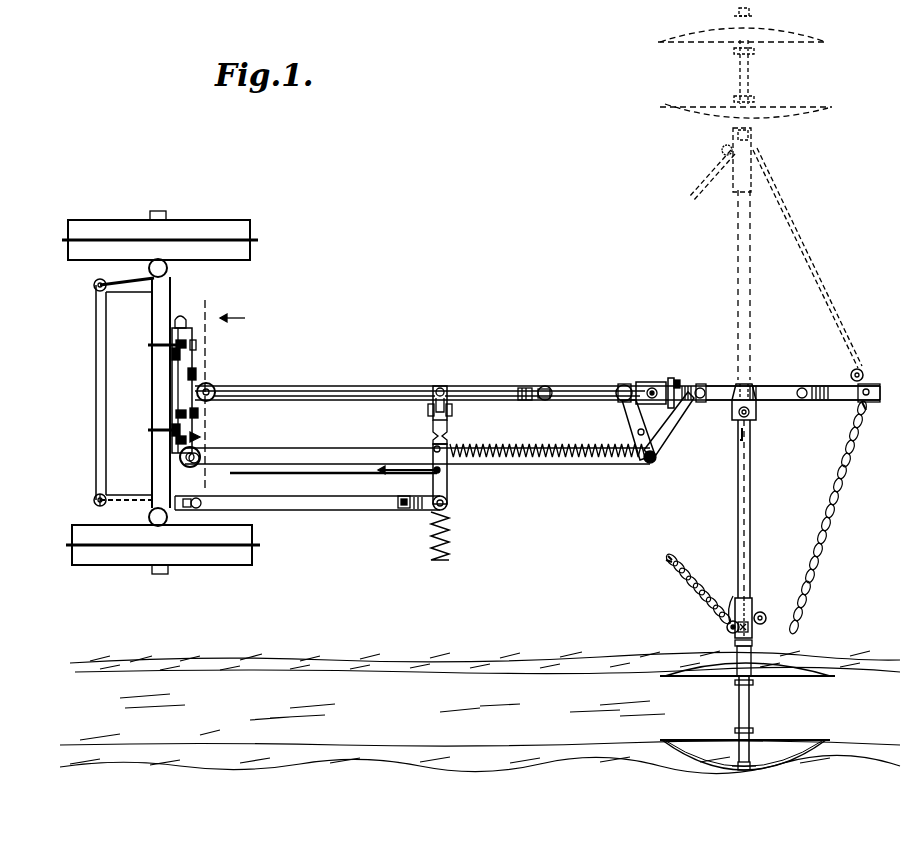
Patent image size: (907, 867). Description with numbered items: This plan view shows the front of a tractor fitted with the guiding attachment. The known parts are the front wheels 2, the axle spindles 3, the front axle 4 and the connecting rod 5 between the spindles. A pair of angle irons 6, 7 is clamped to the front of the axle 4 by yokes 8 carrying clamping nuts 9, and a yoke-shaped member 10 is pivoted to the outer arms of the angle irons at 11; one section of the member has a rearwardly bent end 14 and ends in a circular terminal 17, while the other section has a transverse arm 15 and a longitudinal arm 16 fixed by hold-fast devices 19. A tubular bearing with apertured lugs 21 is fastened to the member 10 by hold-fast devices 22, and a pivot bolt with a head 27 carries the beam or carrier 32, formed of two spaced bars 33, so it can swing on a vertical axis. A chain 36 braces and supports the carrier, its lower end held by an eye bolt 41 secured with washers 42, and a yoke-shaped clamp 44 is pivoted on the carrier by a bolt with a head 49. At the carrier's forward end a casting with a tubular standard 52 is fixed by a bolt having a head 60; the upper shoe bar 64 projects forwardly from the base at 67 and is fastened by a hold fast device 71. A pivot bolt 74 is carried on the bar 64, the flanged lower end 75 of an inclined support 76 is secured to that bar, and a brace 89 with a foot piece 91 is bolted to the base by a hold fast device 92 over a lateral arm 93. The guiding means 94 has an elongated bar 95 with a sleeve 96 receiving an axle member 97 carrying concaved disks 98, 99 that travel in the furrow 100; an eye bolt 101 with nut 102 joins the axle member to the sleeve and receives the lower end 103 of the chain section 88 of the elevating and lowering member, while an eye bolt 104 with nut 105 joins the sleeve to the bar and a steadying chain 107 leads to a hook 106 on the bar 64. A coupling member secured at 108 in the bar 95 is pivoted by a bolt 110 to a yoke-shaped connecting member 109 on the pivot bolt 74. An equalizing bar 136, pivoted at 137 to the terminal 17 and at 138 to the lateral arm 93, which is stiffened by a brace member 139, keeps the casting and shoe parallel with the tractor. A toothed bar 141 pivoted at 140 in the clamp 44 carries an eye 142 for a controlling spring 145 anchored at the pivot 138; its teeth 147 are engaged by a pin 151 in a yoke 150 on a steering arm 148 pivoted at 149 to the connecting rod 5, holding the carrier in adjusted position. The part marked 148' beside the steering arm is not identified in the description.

The front wheels 2 is at (96, 212).
The axle spindles 3 is at (130, 285).
The front axle 4 is at (170, 300).
The connecting rod 5 is at (96, 352).
The angle iron 6 is at (174, 352).
The angle iron 7 is at (172, 432).
The yokes 8 is at (148, 345).
The clamping nuts 9 is at (186, 346).
The yoke-shaped member 10 is at (196, 350).
The pivotal connection 11 is at (181, 318).
The rearwardly extending end 14 is at (183, 337).
The transversely disposed arm 15 is at (176, 414).
The longitudinally extending arm 16 is at (176, 442).
The circular terminal 17 is at (186, 467).
The hold-fast devices 19 is at (206, 439).
The apertured lugs 21 is at (198, 414).
The hold-fast devices 22 is at (196, 372).
The head 27 is at (212, 386).
The beam 32 is at (322, 388).
The bars 33 is at (346, 392).
The chain 36 is at (524, 388).
The eye bolt 41 is at (552, 390).
The washers 42 is at (548, 386).
The yoke-shaped clamp 44 is at (436, 388).
The bolt head 49 is at (444, 388).
The tubular standard 52 is at (652, 388).
The head 60 is at (672, 378).
The bar 64 is at (712, 400).
The forward projection 67 is at (870, 384).
The hold fast device 71 is at (706, 388).
The pivot bolt 74 is at (686, 386).
The flanged lower end 75 is at (700, 384).
The support 76 is at (682, 380).
The chain section 88 is at (702, 182).
The brace element 89 is at (648, 384).
The foot piece 91 is at (620, 385).
The hold fast device 92 is at (628, 384).
The lateral arm 93 is at (636, 426).
The guiding means 94 is at (750, 258).
The elongated bar 95 is at (738, 520).
The sleeve 96 is at (752, 145).
The axle member 97 is at (738, 72).
The concaved disk 98 is at (788, 110).
The concaved disk 99 is at (786, 32).
The furrow 100 is at (536, 696).
The eye bolt 101 is at (738, 628).
The securing nut 102 is at (755, 636).
The lower end 103 is at (727, 627).
The eye bolt 104 is at (767, 616).
The securing nut 105 is at (722, 599).
The hook 106 is at (852, 376).
The steadying chain 107 is at (786, 214).
The connection 108 is at (748, 424).
The yoke-shaped connecting member 109 is at (750, 412).
The pivot bolt 110 is at (741, 434).
The equalizing bar 136 is at (310, 446).
The pivotal connection 137 is at (200, 455).
The pivot 138 is at (658, 458).
The brace member 139 is at (676, 415).
The pivotal connection 140 is at (425, 420).
The toothed bar 141 is at (447, 482).
The eye 142 is at (454, 436).
The controlling spring 145 is at (530, 446).
The teeth 147 is at (449, 532).
The steering arm 148 is at (307, 514).
The pivot 148' is at (214, 512).
The pivotal connection 149 is at (94, 498).
The yoke 150 is at (418, 509).
The pin 151 is at (448, 505).